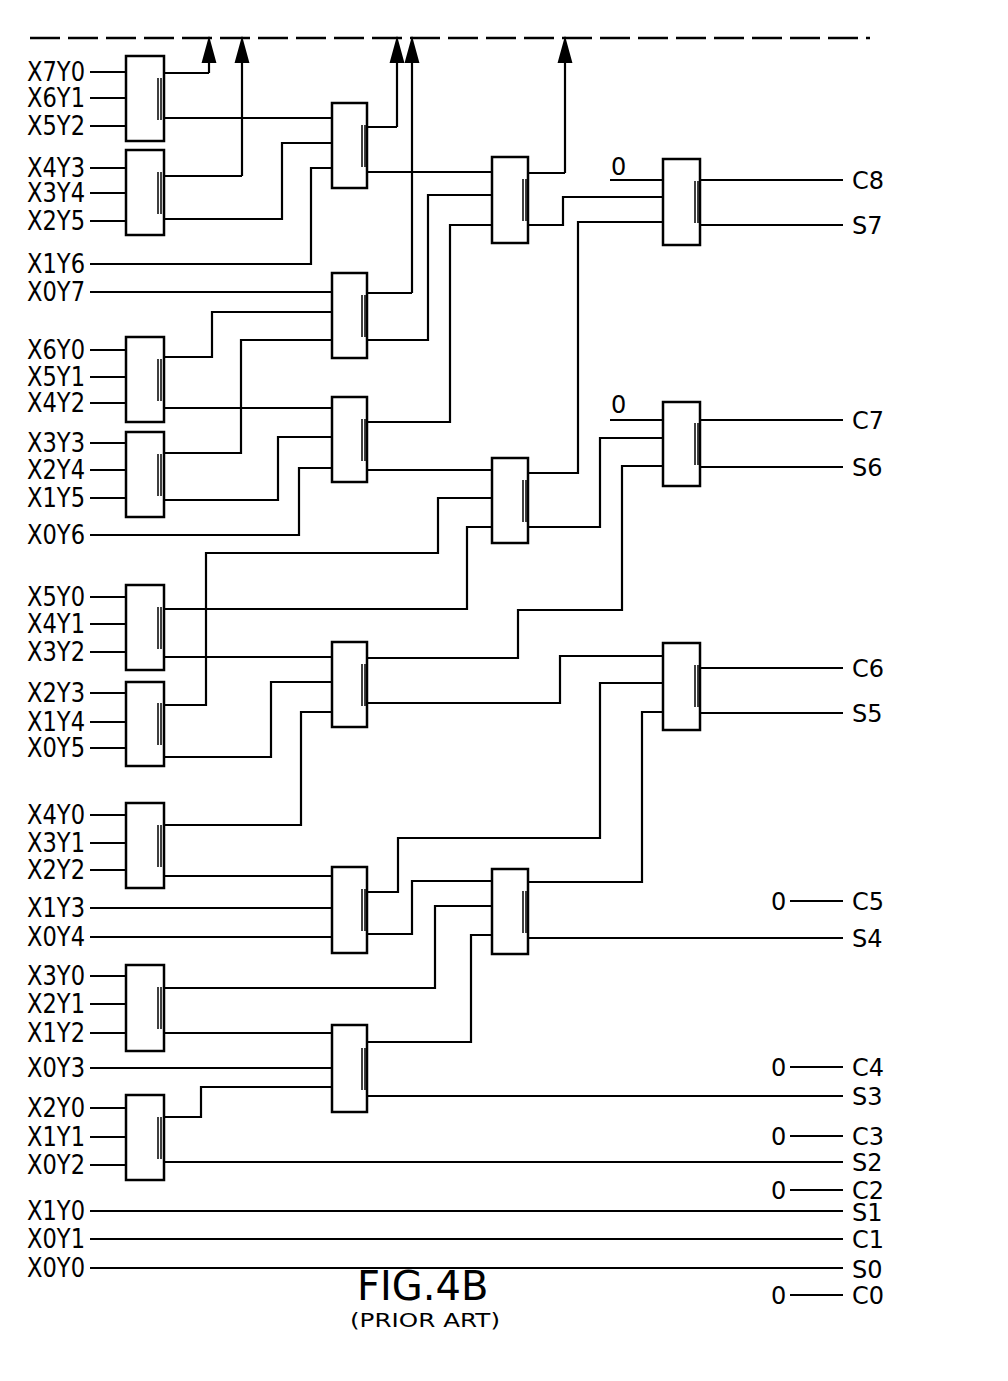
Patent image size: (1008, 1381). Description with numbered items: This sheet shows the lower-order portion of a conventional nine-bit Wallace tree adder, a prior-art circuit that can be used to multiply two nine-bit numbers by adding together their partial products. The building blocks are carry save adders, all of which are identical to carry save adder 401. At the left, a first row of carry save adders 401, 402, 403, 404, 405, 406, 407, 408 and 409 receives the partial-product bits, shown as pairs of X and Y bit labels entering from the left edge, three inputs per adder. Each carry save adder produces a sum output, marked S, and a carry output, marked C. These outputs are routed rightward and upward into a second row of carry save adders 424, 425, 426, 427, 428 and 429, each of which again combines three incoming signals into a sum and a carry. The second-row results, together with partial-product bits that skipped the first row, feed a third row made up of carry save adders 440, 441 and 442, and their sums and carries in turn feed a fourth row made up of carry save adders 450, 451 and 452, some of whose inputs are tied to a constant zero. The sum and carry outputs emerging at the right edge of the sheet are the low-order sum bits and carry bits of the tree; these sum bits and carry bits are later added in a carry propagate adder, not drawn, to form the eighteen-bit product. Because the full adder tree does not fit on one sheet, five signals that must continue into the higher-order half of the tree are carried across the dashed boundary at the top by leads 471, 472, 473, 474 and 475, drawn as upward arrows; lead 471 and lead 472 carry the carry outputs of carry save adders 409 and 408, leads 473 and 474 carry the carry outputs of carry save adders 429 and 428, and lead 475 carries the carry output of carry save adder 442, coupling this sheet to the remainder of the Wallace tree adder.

The carry save adder 401 is at (159, 1136).
The carry save adder 402 is at (158, 1008).
The carry save adder 403 is at (159, 844).
The carry save adder 404 is at (159, 723).
The carry save adder 405 is at (159, 627).
The carry save adder 406 is at (159, 472).
The carry save adder 407 is at (159, 377).
The carry save adder 408 is at (159, 192).
The carry save adder 409 is at (159, 95).
The carry save adder 424 is at (364, 1064).
The carry save adder 425 is at (364, 910).
The carry save adder 426 is at (364, 680).
The carry save adder 427 is at (364, 439).
The carry save adder 428 is at (364, 313).
The carry save adder 429 is at (364, 145).
The carry save adder 440 is at (524, 904).
The carry save adder 441 is at (524, 495).
The carry save adder 442 is at (524, 195).
The carry save adder 450 is at (694, 686).
The carry save adder 451 is at (694, 440).
The carry save adder 452 is at (694, 200).
The lead 471 is at (206, 40).
The lead 472 is at (243, 74).
The lead 473 is at (396, 80).
The lead 474 is at (413, 86).
The lead 475 is at (566, 80).